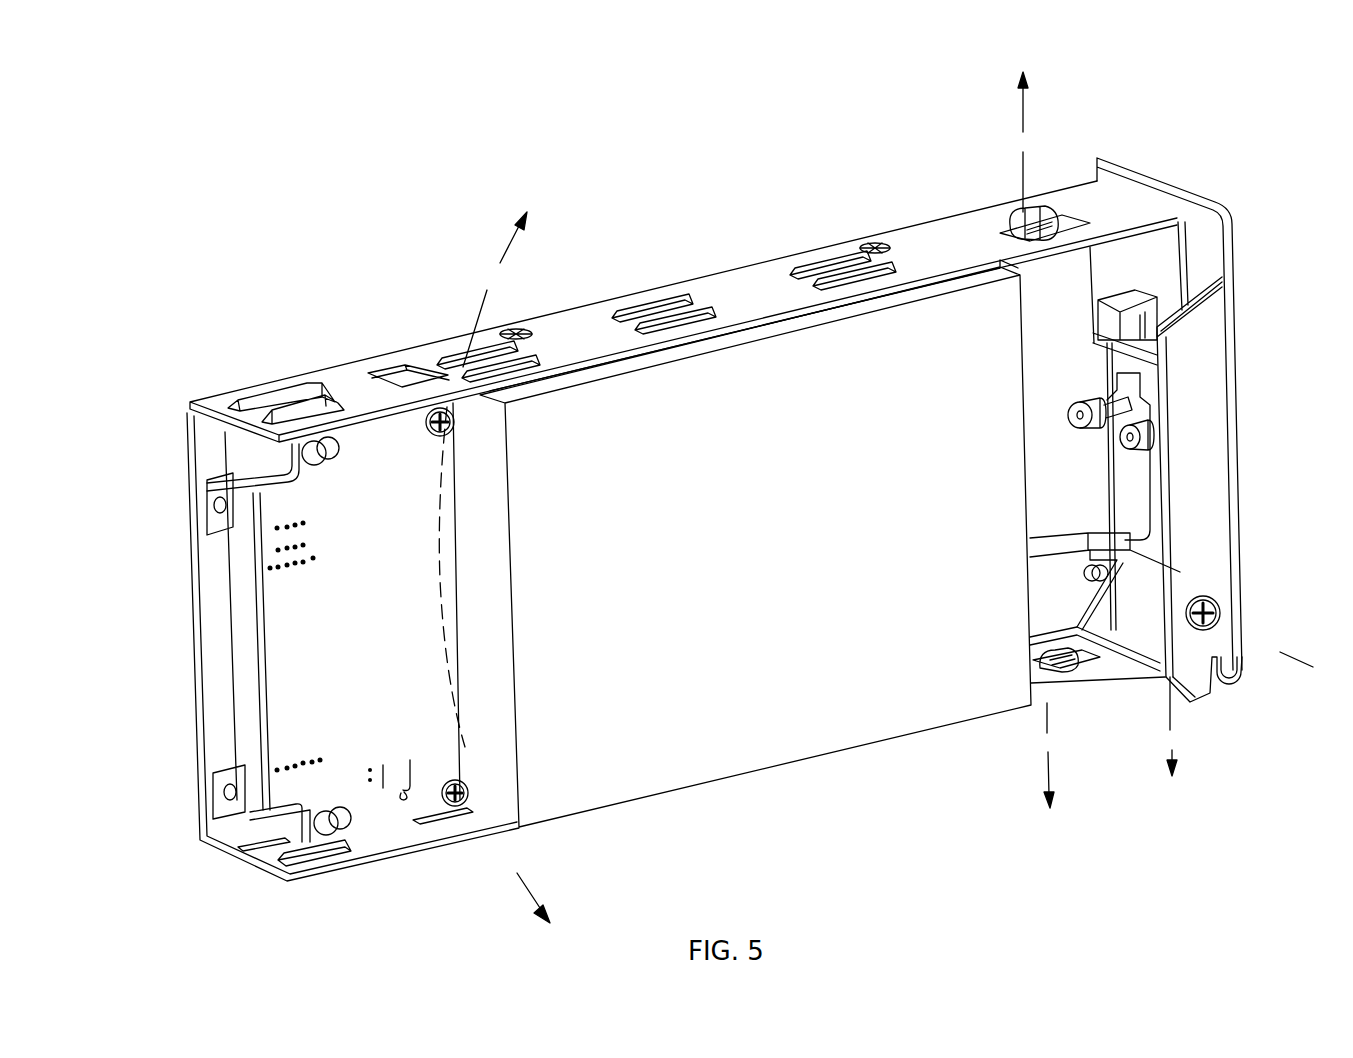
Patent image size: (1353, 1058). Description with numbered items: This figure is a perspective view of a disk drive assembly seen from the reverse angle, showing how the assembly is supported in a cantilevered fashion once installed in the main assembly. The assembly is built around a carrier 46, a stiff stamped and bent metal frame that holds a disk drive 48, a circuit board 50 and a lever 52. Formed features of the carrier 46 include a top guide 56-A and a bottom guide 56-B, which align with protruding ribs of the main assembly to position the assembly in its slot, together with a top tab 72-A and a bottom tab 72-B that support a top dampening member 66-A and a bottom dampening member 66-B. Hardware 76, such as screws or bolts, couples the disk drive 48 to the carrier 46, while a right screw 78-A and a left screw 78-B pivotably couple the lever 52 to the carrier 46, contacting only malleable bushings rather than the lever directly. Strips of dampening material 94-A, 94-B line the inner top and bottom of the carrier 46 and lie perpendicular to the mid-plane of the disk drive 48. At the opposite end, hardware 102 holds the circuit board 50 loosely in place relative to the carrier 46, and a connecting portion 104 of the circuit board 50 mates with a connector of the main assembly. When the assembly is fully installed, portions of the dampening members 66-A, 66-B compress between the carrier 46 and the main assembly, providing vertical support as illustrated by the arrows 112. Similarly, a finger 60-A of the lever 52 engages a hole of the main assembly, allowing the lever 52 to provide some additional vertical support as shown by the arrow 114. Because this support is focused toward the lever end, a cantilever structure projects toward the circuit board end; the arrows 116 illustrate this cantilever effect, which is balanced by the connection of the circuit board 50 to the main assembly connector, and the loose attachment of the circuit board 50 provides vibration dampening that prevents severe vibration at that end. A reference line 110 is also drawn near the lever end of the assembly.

The carrier 46 is at (347, 380).
The disk drive 48 is at (790, 566).
The circuit board 50 is at (372, 657).
The lever 52 is at (1197, 218).
The top guide 56-A is at (813, 262).
The bottom guide 56-B is at (437, 824).
The finger 60-A is at (1203, 690).
The top dampening member 66-A is at (1015, 222).
The bottom dampening member 66-B is at (1073, 670).
The top tab 72-A is at (1060, 238).
The bottom tab 72-B is at (1050, 677).
The hardware 76 is at (874, 243).
The right screw 78-A is at (1212, 605).
The left screw 78-B is at (1090, 582).
The strip of dampening material 94-A is at (753, 328).
The strip of dampening material 94-B is at (510, 832).
The hardware 102 is at (423, 433).
The connecting portion 104 is at (213, 648).
The reference plane 110 is at (1297, 663).
The arrows 112 is at (1026, 108).
The arrow 114 is at (1170, 752).
The arrows 116 is at (507, 248).